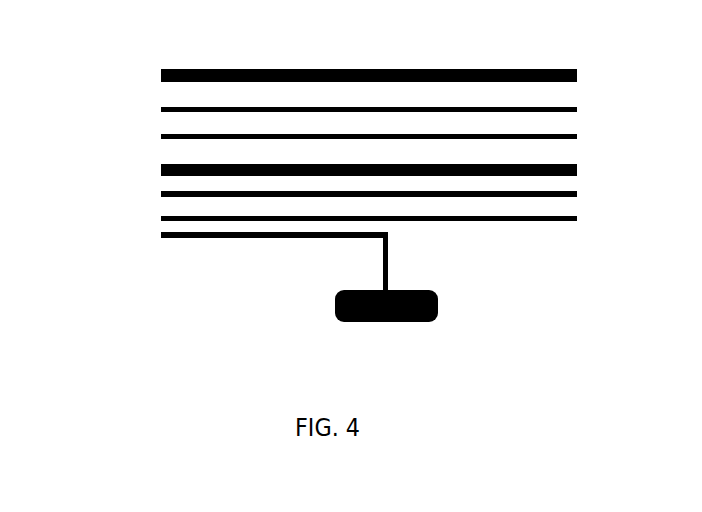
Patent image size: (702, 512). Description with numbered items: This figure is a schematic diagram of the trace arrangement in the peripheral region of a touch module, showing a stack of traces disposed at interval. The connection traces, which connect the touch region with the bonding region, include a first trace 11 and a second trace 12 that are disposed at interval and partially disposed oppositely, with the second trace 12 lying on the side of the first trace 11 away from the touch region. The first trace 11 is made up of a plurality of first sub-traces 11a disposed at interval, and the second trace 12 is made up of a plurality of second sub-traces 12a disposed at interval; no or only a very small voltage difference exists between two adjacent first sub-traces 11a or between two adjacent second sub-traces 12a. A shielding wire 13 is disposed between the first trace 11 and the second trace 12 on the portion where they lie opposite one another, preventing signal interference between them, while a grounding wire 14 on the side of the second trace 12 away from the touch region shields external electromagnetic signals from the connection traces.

The first trace 11 is at (366, 281).
The first sub-traces 11a is at (183, 197).
The second trace 12 is at (300, 125).
The second sub-traces 12a is at (190, 108).
The shielding wire 13 is at (163, 174).
The grounding wire 14 is at (213, 70).